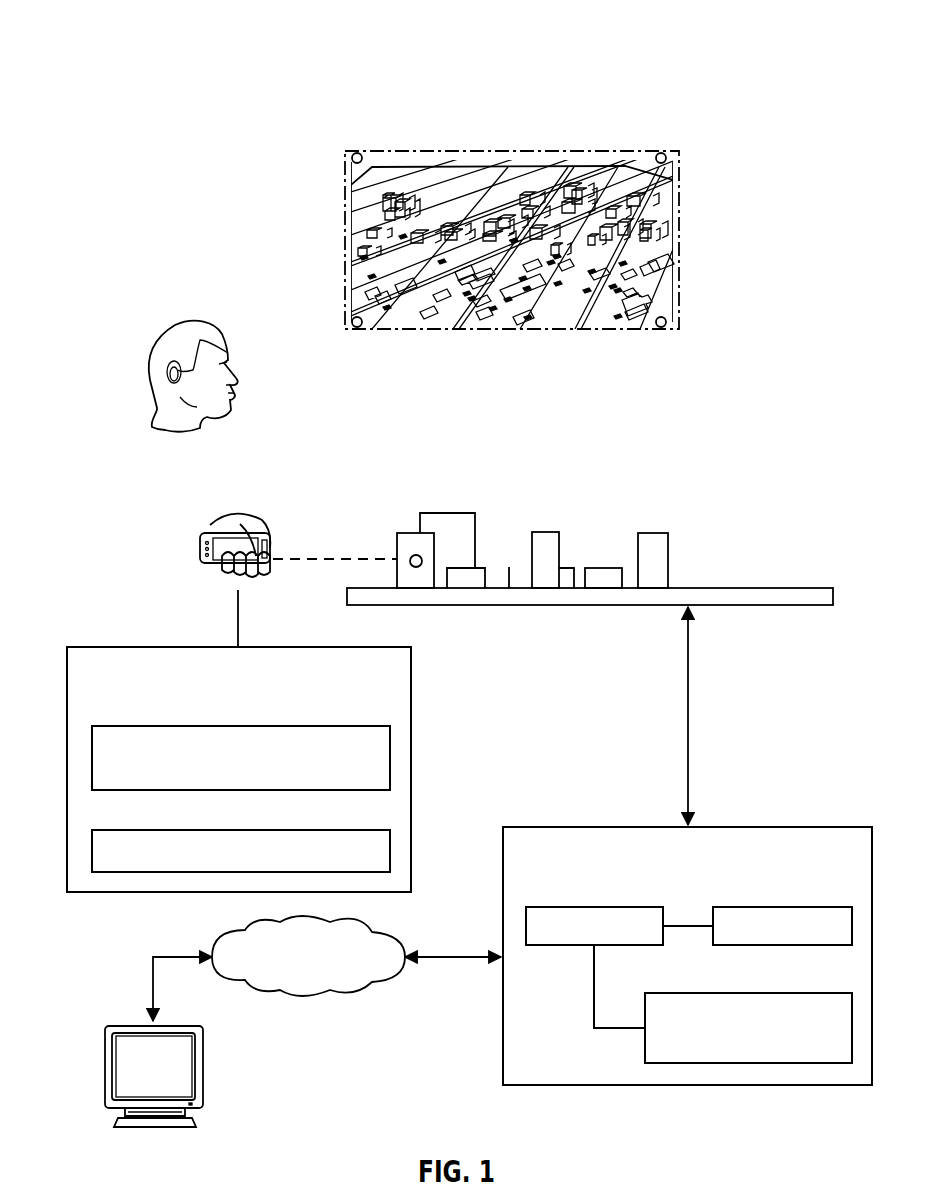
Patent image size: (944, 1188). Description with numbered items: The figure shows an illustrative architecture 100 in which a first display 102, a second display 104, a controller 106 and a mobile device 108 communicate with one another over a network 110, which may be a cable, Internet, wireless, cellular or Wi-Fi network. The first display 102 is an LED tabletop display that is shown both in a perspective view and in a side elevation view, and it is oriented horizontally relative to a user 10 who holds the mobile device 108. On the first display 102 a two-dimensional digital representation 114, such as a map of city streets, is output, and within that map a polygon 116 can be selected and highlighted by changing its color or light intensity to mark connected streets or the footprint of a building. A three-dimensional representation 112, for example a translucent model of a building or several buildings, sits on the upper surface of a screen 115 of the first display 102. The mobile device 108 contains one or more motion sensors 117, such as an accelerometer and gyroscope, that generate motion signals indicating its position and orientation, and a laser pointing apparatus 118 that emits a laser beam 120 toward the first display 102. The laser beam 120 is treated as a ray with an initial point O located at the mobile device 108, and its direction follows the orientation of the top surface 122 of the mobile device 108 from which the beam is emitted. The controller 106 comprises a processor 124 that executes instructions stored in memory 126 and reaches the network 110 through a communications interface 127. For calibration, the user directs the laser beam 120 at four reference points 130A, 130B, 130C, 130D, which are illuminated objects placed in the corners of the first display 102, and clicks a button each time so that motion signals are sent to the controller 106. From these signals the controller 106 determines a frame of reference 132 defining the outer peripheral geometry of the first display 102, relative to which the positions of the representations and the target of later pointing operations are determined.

The illustrative architecture 100 is at (736, 31).
The first display 102 is at (268, 99).
The user 10 is at (178, 337).
The second display 104 is at (125, 1003).
The controller 106 is at (570, 827).
The mobile device 108 is at (143, 647).
The network 110 is at (308, 997).
The three-dimensional representation 112 is at (652, 300).
The two-dimensional digital representation 114 is at (520, 283).
The screen 115 is at (433, 320).
The polygon 116 is at (662, 276).
The one or more motion sensors 117 is at (160, 726).
The laser pointing apparatus 118 is at (160, 830).
The laser beam 120 is at (348, 558).
The top surface 122 is at (255, 580).
The processor 124 is at (590, 907).
The memory 126 is at (780, 907).
The communications interface 127 is at (713, 993).
The reference point 130A is at (359, 153).
The reference point 130B is at (663, 152).
The reference point 130C is at (357, 328).
The reference point 130D is at (661, 328).
The frame of reference 132 is at (556, 167).
The initial point O is at (264, 504).